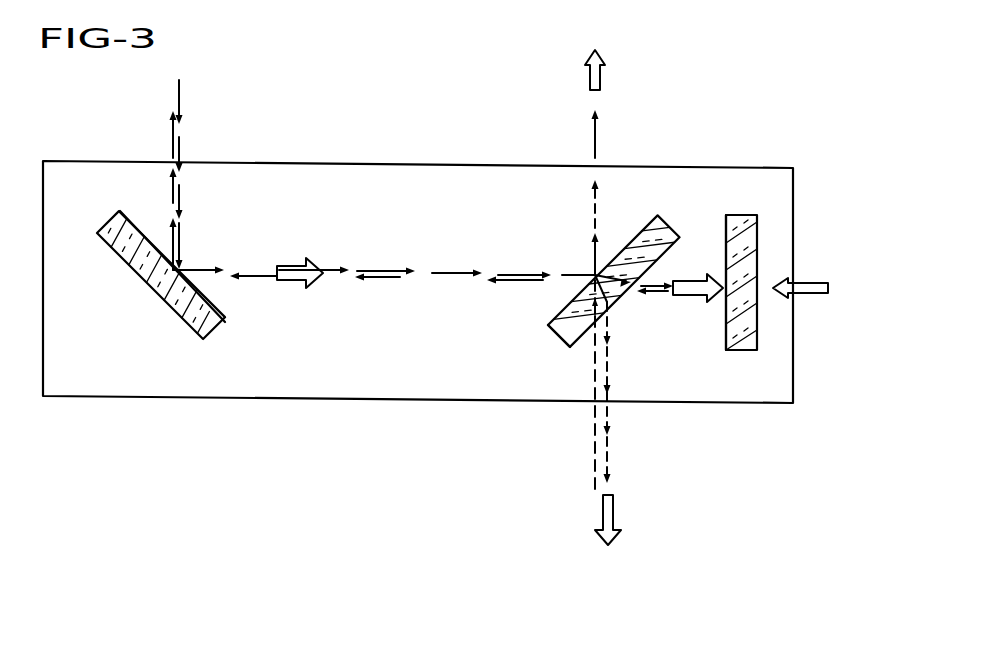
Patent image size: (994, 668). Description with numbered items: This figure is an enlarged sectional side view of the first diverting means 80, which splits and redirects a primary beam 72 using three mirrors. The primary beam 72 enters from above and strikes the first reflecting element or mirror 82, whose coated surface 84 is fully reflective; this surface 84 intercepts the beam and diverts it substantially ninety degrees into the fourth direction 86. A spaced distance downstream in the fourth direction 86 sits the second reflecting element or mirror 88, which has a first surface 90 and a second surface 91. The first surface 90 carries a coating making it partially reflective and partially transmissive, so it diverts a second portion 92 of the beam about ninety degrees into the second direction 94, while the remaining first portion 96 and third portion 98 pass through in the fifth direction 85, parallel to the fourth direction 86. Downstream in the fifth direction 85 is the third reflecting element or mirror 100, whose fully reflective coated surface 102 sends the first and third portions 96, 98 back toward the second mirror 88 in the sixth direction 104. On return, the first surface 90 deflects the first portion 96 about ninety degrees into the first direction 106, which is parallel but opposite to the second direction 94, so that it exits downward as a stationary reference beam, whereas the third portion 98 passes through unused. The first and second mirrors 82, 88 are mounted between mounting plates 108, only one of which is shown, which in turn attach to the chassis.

The primary beam 72 is at (180, 148).
The first diverting means 80 is at (447, 133).
The first reflecting element or mirror 82 is at (117, 255).
The surface 84 is at (125, 213).
The fifth direction 85 is at (689, 285).
The fourth direction 86 is at (292, 279).
The second reflecting element or mirror 88 is at (661, 227).
The first surface 90 is at (633, 240).
The second surface 91 is at (583, 340).
The second portion 92 is at (600, 143).
The second direction 94 is at (603, 75).
The first portion 96 is at (670, 294).
The third portion 98 is at (176, 193).
The third reflecting element or mirror 100 is at (748, 216).
The surface 102 is at (727, 341).
The sixth direction 104 is at (806, 283).
The first direction 106 is at (617, 508).
The mounting plate 108 is at (197, 398).